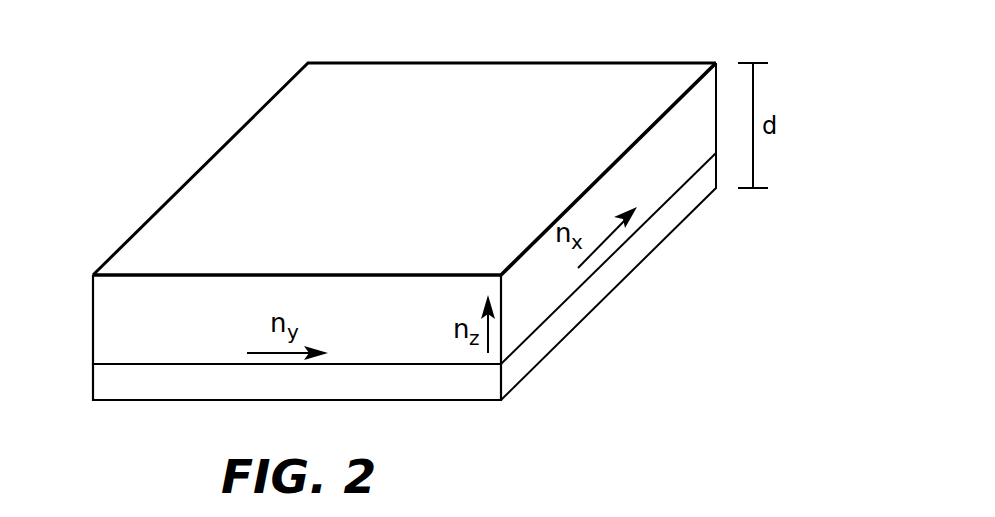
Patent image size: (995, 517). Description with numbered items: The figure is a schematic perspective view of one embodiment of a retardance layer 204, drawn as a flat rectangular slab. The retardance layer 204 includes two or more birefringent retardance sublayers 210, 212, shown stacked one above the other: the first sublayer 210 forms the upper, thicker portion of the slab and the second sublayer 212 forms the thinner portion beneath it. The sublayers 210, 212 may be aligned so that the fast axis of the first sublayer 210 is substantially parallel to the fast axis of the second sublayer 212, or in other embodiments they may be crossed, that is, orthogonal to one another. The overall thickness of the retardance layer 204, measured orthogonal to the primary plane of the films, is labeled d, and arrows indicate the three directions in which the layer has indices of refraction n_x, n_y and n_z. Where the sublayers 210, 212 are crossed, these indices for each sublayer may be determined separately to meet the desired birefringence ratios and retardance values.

The retardance layer 204 is at (495, 75).
The first birefringent retardance sublayer 210 is at (113, 321).
The second birefringent retardance sublayer 212 is at (115, 384).